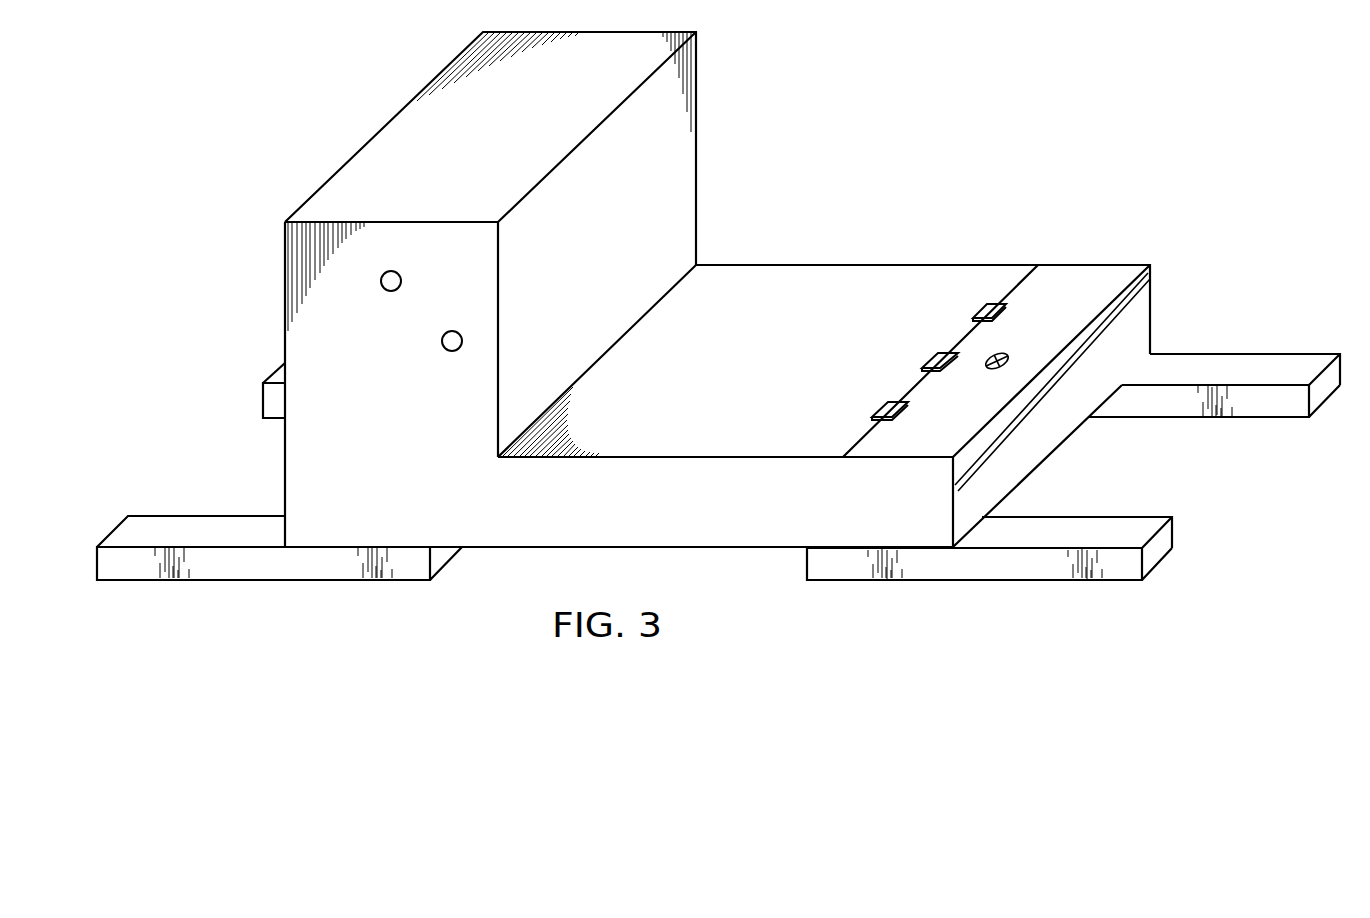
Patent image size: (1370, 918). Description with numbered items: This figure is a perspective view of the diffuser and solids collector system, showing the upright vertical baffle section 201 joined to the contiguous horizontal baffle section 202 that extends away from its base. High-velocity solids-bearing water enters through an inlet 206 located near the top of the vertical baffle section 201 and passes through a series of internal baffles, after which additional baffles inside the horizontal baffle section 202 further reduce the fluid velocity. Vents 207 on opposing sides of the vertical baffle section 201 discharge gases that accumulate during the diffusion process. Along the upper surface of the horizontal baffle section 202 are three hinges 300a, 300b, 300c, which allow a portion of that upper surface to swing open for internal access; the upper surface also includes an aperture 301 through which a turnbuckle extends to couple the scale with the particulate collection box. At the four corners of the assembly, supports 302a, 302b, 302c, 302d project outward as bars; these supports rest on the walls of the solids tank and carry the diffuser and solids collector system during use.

The vertical baffle section 201 is at (372, 140).
The horizontal baffle section 202 is at (923, 264).
The inlet 206 is at (400, 278).
The vents 207 is at (443, 342).
The hinge 300a is at (978, 312).
The hinge 300b is at (929, 360).
The hinge 300c is at (879, 408).
The locating hole 301 is at (997, 355).
The support 302a is at (263, 582).
The support 302b is at (973, 582).
The support 302c is at (1245, 352).
The support 302d is at (263, 402).